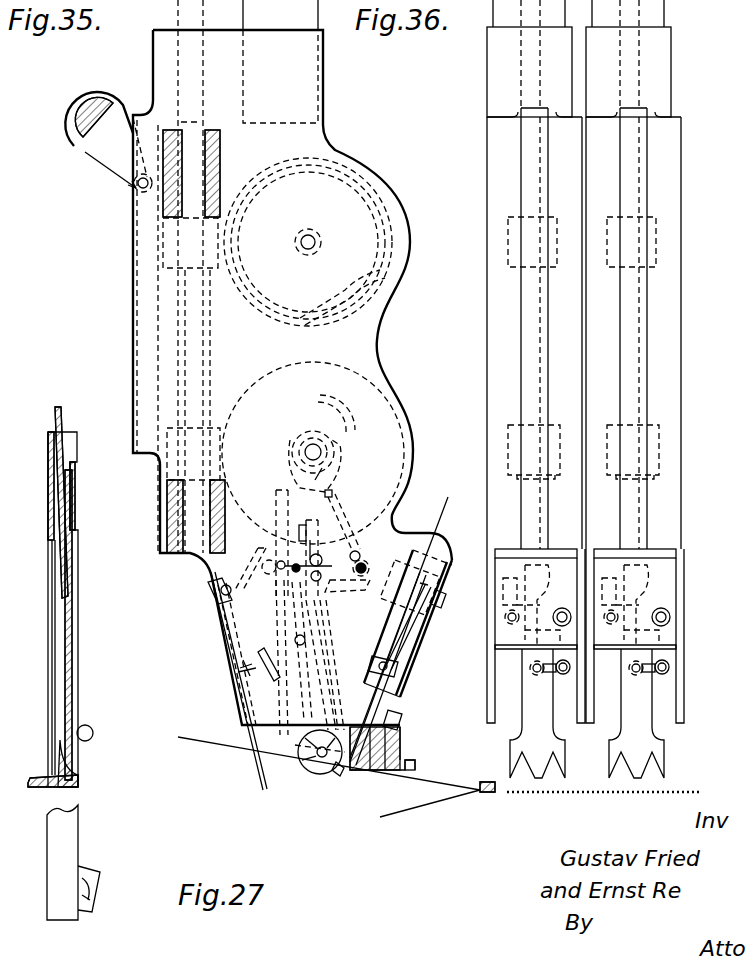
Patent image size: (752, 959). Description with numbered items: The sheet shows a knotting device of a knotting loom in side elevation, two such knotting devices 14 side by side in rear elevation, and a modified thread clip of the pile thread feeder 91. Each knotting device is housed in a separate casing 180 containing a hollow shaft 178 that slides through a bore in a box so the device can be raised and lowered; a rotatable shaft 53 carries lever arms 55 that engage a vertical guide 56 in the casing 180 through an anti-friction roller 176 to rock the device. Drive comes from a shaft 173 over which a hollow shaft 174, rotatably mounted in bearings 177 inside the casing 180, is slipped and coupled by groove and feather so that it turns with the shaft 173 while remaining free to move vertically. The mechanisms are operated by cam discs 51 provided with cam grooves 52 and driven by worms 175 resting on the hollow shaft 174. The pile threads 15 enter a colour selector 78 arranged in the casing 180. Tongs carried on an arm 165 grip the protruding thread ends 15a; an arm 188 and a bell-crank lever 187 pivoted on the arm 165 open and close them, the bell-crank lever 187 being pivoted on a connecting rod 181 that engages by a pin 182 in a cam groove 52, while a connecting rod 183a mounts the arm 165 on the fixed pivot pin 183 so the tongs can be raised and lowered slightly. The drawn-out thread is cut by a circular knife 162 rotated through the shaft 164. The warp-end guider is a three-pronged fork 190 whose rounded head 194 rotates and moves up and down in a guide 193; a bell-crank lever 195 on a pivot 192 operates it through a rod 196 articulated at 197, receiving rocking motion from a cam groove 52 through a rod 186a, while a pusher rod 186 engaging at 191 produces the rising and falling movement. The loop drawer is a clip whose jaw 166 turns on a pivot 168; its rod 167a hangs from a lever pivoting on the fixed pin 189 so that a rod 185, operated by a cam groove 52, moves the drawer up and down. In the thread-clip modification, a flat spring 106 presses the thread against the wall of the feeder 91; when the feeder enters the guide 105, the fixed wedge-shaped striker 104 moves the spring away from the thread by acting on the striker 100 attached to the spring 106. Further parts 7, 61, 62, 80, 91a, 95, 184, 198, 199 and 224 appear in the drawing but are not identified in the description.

In FIG. 35, the section line 7 is at (329, 770).
In FIG. 36, the section line 7 is at (596, 790).
In FIG. 35, the knotting device 14 is at (415, 632).
In FIG. 36, the knotting device 14 is at (500, 710).
In FIG. 35, the pile thread 15 is at (383, 647).
In FIG. 27, the pile thread 15 is at (58, 412).
In FIG. 27, the pile thread end 15a is at (40, 778).
In FIG. 35, the cam disc 51 is at (392, 232).
In FIG. 35, the cam groove 52 is at (380, 276).
In FIG. 35, the rotatable shaft 53 is at (105, 107).
In FIG. 35, the lever arm 55 is at (110, 174).
In FIG. 35, the vertical guide 56 is at (142, 286).
In FIG. 36, the vertical guide 56 is at (530, 316).
In FIG. 35, the pin 61 is at (338, 775).
In FIG. 35, the bolt 62 is at (360, 773).
In FIG. 35, the colour selector 78 is at (455, 562).
In FIG. 35, the guide block 80 is at (446, 598).
In FIG. 27, the thread feeder 91 is at (76, 618).
In FIG. 27, the guide strip edge 91a is at (72, 478).
In FIG. 35, the push rod 95 is at (388, 668).
In FIG. 27, the striker 100 is at (99, 734).
In FIG. 35, the wedge-shaped striker 104 is at (362, 727).
In FIG. 27, the wedge-shaped striker 104 is at (95, 888).
In FIG. 35, the guide 105 is at (372, 712).
In FIG. 27, the guide 105 is at (70, 846).
In FIG. 27, the flat spring 106 is at (57, 648).
In FIG. 35, the circular knife 162 is at (318, 778).
In FIG. 35, the shaft 164 is at (263, 670).
In FIG. 35, the arm 165 is at (322, 640).
In FIG. 35, the jaw 166 is at (310, 764).
In FIG. 35, the rod 167a is at (265, 657).
In FIG. 35, the pivot 168 is at (298, 650).
In FIG. 35, the shaft 173 is at (191, 89).
In FIG. 36, the shaft 173 is at (524, 2).
In FIG. 35, the hollow shaft 174 is at (205, 128).
In FIG. 35, the worm 175 is at (210, 247).
In FIG. 36, the worm 175 is at (652, 258).
In FIG. 35, the anti-friction roller 176 is at (138, 192).
In FIG. 35, the bearing 177 is at (215, 170).
In FIG. 35, the hollow shaft 178 is at (305, 12).
In FIG. 36, the hollow shaft 178 is at (662, 12).
In FIG. 35, the casing 180 is at (314, 137).
In FIG. 36, the casing 180 is at (496, 137).
In FIG. 35, the connecting rod 181 is at (342, 520).
In FIG. 35, the pin 182 is at (333, 495).
In FIG. 35, the fixed pivot pin 183 is at (363, 559).
In FIG. 35, the connecting rod 183a is at (347, 595).
In FIG. 35, the rod 184 is at (305, 551).
In FIG. 35, the rod 185 is at (282, 539).
In FIG. 35, the pusher rod 186 is at (256, 548).
In FIG. 36, the rod 186a is at (508, 596).
In FIG. 35, the bell-crank lever 187 is at (302, 626).
In FIG. 35, the arm 188 is at (313, 665).
In FIG. 35, the fixed pin 189 is at (297, 552).
In FIG. 35, the three-pronged fork 190 is at (262, 784).
In FIG. 36, the three-pronged fork 190 is at (508, 750).
In FIG. 35, the engagement point 191 is at (225, 595).
In FIG. 36, the pivot 192 is at (670, 617).
In FIG. 36, the guide 193 is at (655, 588).
In FIG. 36, the rounded head 194 is at (640, 576).
In FIG. 36, the bell-crank lever 195 is at (665, 655).
In FIG. 36, the rod 196 is at (653, 672).
In FIG. 35, the articulation point 197 is at (243, 675).
In FIG. 36, the articulation point 197 is at (530, 670).
In FIG. 36, the fork tine 198 is at (574, 776).
In FIG. 36, the fork tine 199 is at (606, 776).
In FIG. 35, the cam shaft 224 is at (310, 244).